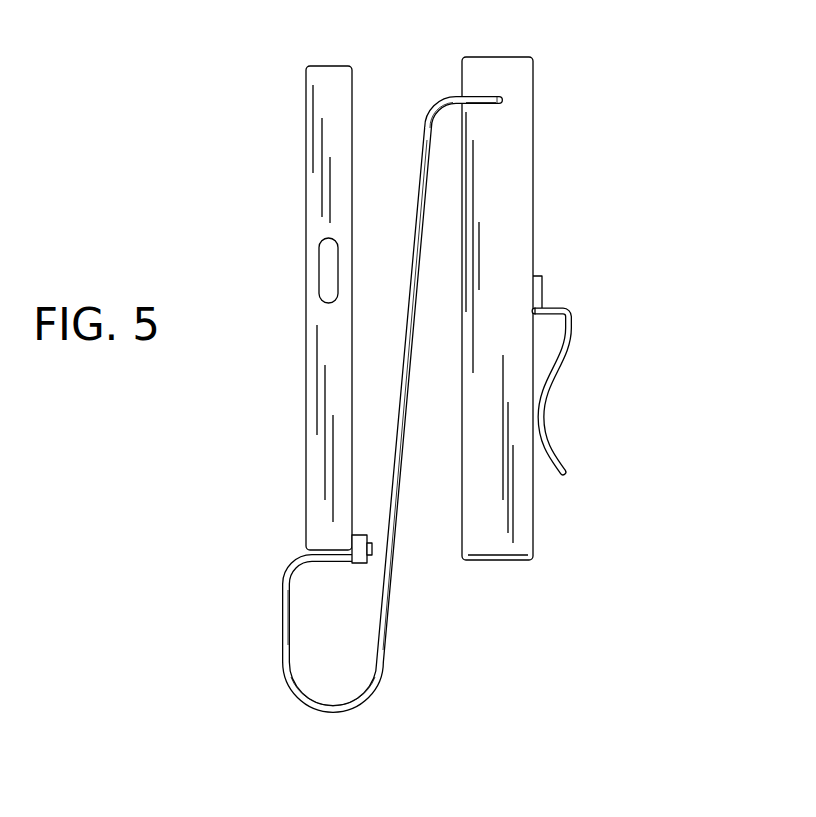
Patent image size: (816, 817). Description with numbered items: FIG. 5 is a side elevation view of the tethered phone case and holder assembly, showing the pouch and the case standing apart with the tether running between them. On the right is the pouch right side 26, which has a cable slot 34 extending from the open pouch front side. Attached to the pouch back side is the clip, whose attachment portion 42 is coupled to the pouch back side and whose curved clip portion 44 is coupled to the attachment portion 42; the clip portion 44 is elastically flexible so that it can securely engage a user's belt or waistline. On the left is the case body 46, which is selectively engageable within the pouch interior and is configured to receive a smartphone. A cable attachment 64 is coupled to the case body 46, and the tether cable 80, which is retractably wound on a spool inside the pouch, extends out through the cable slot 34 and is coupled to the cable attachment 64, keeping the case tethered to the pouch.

The pouch right side 26 is at (498, 218).
The cable slot 34 is at (487, 107).
The attachment portion 42 is at (543, 292).
The curved clip portion 44 is at (555, 365).
The case body 46 is at (323, 423).
The cable attachment 64 is at (358, 547).
The tether cable 80 is at (373, 688).